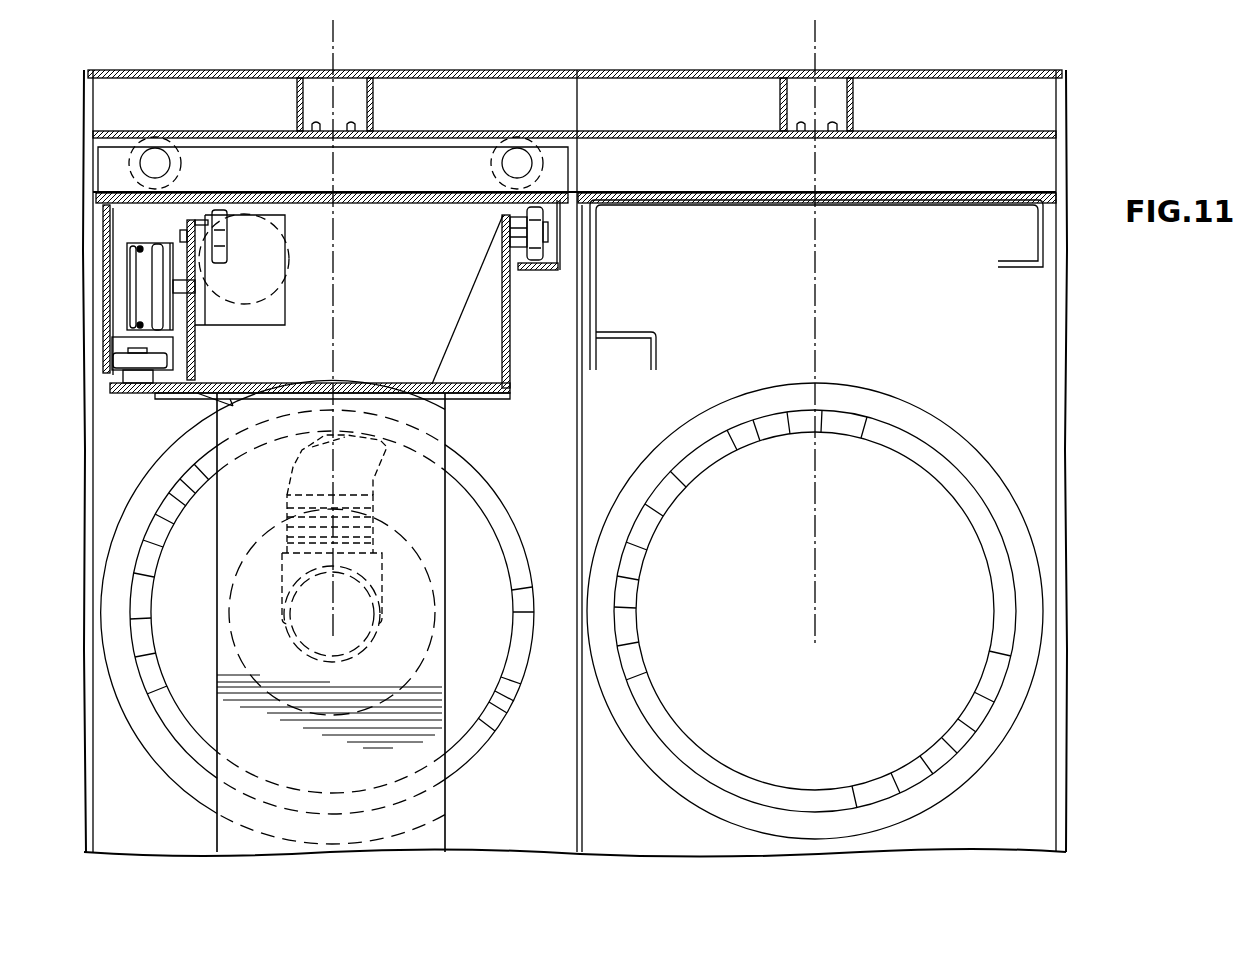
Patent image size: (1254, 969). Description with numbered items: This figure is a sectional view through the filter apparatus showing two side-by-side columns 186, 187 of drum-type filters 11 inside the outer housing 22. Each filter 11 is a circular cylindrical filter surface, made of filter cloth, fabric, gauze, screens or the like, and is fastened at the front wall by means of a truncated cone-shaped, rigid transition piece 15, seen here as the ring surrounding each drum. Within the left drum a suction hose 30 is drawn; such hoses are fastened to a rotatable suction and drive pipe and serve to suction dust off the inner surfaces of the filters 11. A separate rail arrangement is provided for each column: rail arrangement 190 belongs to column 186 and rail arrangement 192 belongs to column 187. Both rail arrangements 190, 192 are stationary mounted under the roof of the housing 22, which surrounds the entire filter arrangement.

The drum-type filter 11 is at (497, 448).
The transition piece 15 is at (497, 708).
The outer housing 22 is at (175, 75).
The suction hose 30 is at (380, 507).
The column 186 is at (335, 40).
The column 187 is at (816, 38).
The rail arrangement 190 is at (398, 208).
The rail arrangement 192 is at (895, 205).